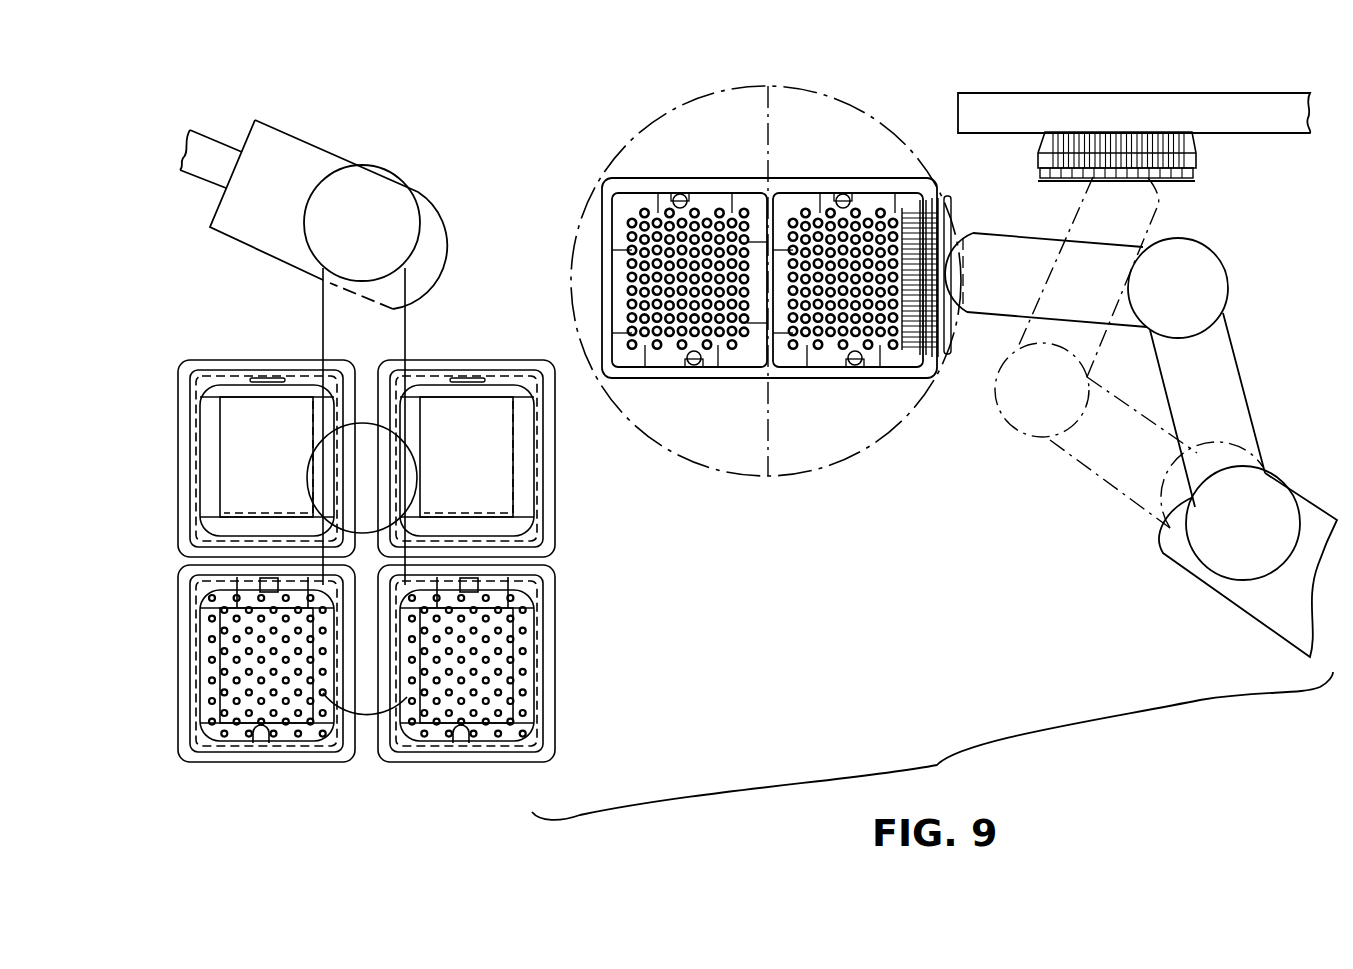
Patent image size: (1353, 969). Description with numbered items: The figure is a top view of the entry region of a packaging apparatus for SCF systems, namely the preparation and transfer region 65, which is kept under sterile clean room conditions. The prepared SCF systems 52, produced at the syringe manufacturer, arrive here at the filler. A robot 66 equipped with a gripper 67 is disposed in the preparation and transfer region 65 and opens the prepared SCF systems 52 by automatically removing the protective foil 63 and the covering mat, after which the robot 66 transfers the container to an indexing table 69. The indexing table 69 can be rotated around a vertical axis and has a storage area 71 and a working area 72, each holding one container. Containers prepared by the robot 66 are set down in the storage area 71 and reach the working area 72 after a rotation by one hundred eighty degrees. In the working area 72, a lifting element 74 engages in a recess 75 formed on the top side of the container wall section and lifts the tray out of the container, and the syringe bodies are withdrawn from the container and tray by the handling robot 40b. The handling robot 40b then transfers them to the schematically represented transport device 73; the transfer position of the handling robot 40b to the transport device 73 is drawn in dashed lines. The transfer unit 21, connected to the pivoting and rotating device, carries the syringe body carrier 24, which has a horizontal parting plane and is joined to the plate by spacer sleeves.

The transfer unit 21 is at (1196, 175).
The syringe body carrier 24 is at (1195, 160).
The handling robot 40b is at (1245, 384).
The SCF system 52 is at (185, 492).
The protective foil 63 is at (266, 410).
The preparation and transfer region 65 is at (858, 93).
The robot 66 is at (433, 241).
The gripper 67 is at (368, 713).
The indexing table 69 is at (693, 462).
The storage area 71 is at (750, 460).
The working area 72 is at (788, 460).
The transport device 73 is at (1003, 103).
The lifting element 74 is at (689, 199).
The recess 75 is at (681, 194).